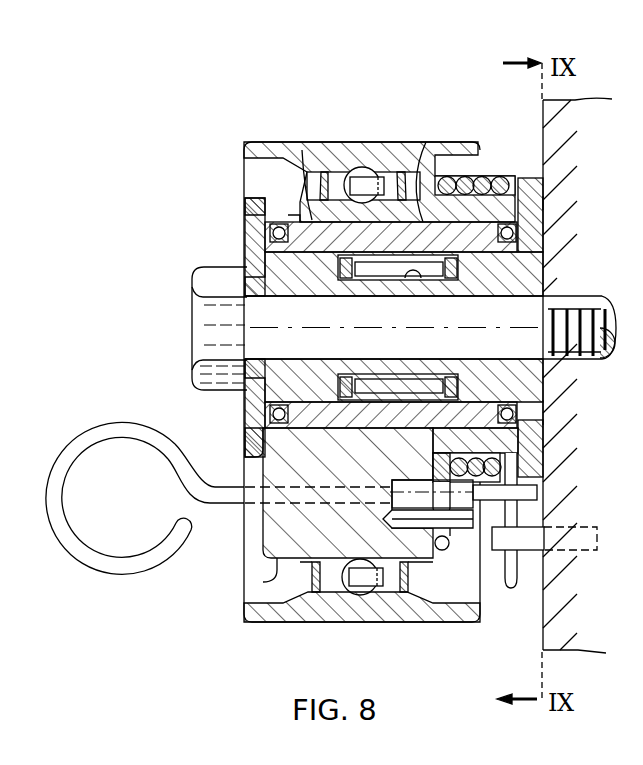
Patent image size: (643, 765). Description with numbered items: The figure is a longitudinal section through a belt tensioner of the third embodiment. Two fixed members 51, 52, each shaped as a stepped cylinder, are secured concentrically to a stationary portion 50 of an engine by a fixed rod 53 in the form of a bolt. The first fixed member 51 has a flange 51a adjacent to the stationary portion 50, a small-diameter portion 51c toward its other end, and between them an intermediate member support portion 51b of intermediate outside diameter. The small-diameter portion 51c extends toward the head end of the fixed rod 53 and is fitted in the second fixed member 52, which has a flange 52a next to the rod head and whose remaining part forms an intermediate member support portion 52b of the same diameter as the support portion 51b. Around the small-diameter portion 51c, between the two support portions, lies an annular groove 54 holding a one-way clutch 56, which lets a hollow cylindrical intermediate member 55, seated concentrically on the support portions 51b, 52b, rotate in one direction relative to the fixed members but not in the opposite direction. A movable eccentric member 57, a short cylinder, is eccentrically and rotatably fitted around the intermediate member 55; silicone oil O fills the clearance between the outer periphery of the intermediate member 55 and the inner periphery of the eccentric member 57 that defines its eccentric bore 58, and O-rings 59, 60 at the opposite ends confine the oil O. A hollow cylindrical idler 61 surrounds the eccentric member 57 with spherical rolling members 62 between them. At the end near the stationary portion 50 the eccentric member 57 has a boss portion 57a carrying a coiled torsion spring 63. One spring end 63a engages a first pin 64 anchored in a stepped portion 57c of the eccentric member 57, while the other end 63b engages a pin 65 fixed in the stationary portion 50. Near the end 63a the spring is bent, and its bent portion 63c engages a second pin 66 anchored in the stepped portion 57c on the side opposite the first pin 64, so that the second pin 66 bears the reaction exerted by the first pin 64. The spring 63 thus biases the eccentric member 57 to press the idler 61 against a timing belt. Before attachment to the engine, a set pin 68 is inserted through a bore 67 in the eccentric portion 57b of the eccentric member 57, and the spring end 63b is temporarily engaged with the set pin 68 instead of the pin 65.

The stationary portion 50 is at (542, 118).
The first fixed member 51 is at (543, 203).
The flange 51a is at (530, 178).
The intermediate member support portion 51b is at (543, 252).
The small-diameter portion 51c is at (247, 258).
The second fixed member 52 is at (263, 231).
The flange 52a is at (253, 196).
The intermediate member support portion 52b is at (293, 215).
The fixed rod 53 is at (190, 328).
The annular groove 54 is at (418, 275).
The intermediate member 55 is at (302, 150).
The one-way clutch 56 is at (383, 283).
The movable eccentric member 57 is at (277, 533).
The boss portion 57a is at (543, 457).
The eccentric portion 57b is at (277, 578).
The stepped portion 57c is at (436, 552).
The eccentric bore 58 is at (265, 400).
The O-ring 59 is at (543, 420).
The O-ring 60 is at (268, 416).
The idler 61 is at (260, 148).
The spherical rolling members 62 is at (363, 167).
The coiled torsion spring 63 is at (487, 172).
The spring end 63a is at (472, 532).
The spring end 63b is at (512, 578).
The bent portion 63c is at (436, 470).
The first pin 64 is at (479, 586).
The pin 65 is at (527, 532).
The second pin 66 is at (527, 492).
The bore 67 is at (243, 493).
The set pin 68 is at (128, 568).
The silicone oil O is at (419, 163).